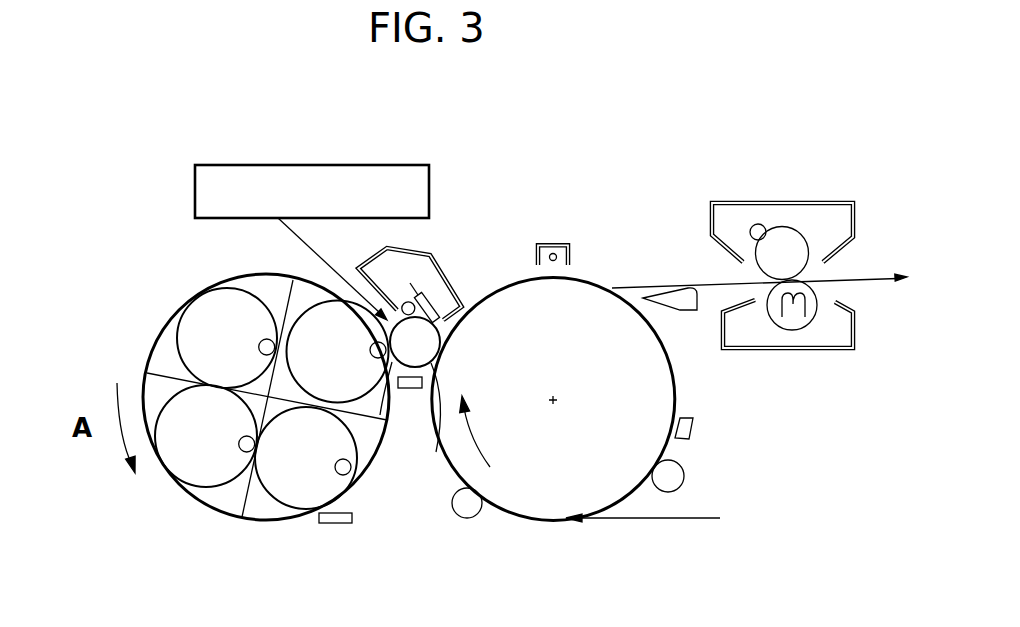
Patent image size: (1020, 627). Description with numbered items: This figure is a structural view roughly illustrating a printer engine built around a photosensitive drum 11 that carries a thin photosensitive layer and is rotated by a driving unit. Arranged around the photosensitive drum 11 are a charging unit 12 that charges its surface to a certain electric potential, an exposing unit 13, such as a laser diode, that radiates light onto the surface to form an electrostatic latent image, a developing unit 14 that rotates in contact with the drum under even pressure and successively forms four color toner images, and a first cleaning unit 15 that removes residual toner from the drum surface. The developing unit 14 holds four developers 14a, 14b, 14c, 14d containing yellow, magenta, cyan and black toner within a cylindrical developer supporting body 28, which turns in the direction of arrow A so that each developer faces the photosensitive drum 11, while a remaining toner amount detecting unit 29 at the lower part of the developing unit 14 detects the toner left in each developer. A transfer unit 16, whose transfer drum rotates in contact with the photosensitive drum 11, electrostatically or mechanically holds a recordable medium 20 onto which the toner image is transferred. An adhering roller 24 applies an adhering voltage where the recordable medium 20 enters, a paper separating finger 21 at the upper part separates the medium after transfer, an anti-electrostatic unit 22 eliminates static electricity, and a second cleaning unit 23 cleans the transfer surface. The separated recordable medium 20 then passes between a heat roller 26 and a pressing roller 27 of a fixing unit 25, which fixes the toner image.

The photosensitive drum 11 is at (441, 452).
The charging unit 12 is at (404, 302).
The exposing unit 13 is at (308, 165).
The developing unit 14 is at (116, 359).
The developer 14a is at (338, 352).
The developer 14b is at (306, 458).
The developer 14c is at (206, 436).
The developer 14d is at (227, 338).
The first cleaning unit 15 is at (433, 306).
The transfer unit 16 is at (530, 518).
The recordable medium 20 is at (653, 520).
The paper separating finger 21 is at (680, 310).
The anti-electrostatic unit 22 is at (684, 478).
The second cleaning unit 23 is at (693, 427).
The adhering roller 24 is at (463, 518).
The fixing unit 25 is at (762, 203).
The heat roller 26 is at (813, 317).
The pressing roller 27 is at (802, 237).
The developer supporting body 28 is at (207, 505).
The remaining toner amount detecting unit 29 is at (335, 523).